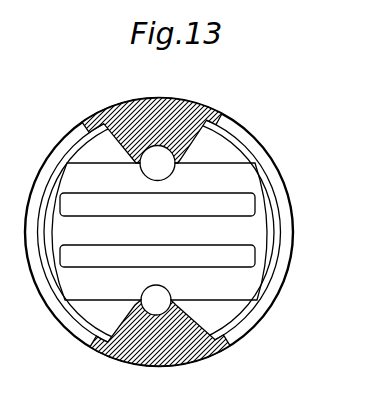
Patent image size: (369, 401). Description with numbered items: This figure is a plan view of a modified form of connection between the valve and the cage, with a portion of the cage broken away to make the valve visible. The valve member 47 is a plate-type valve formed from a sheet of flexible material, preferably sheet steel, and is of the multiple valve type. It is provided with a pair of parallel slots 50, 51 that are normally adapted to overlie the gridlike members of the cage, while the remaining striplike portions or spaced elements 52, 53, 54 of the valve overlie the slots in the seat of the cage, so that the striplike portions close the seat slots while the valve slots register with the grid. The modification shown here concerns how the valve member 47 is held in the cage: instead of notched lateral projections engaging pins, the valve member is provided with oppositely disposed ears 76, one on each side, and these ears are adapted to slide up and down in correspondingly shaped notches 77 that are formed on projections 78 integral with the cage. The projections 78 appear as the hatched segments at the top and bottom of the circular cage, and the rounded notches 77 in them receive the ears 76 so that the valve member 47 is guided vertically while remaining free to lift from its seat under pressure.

The valve member 47 is at (227, 162).
The slot 50 is at (248, 202).
The slot 51 is at (252, 254).
The striplike portion 52 is at (241, 171).
The striplike portion 53 is at (252, 225).
The striplike portion 54 is at (250, 277).
The ear 76 is at (163, 152).
The notch 77 is at (135, 133).
The projection 78 is at (86, 126).